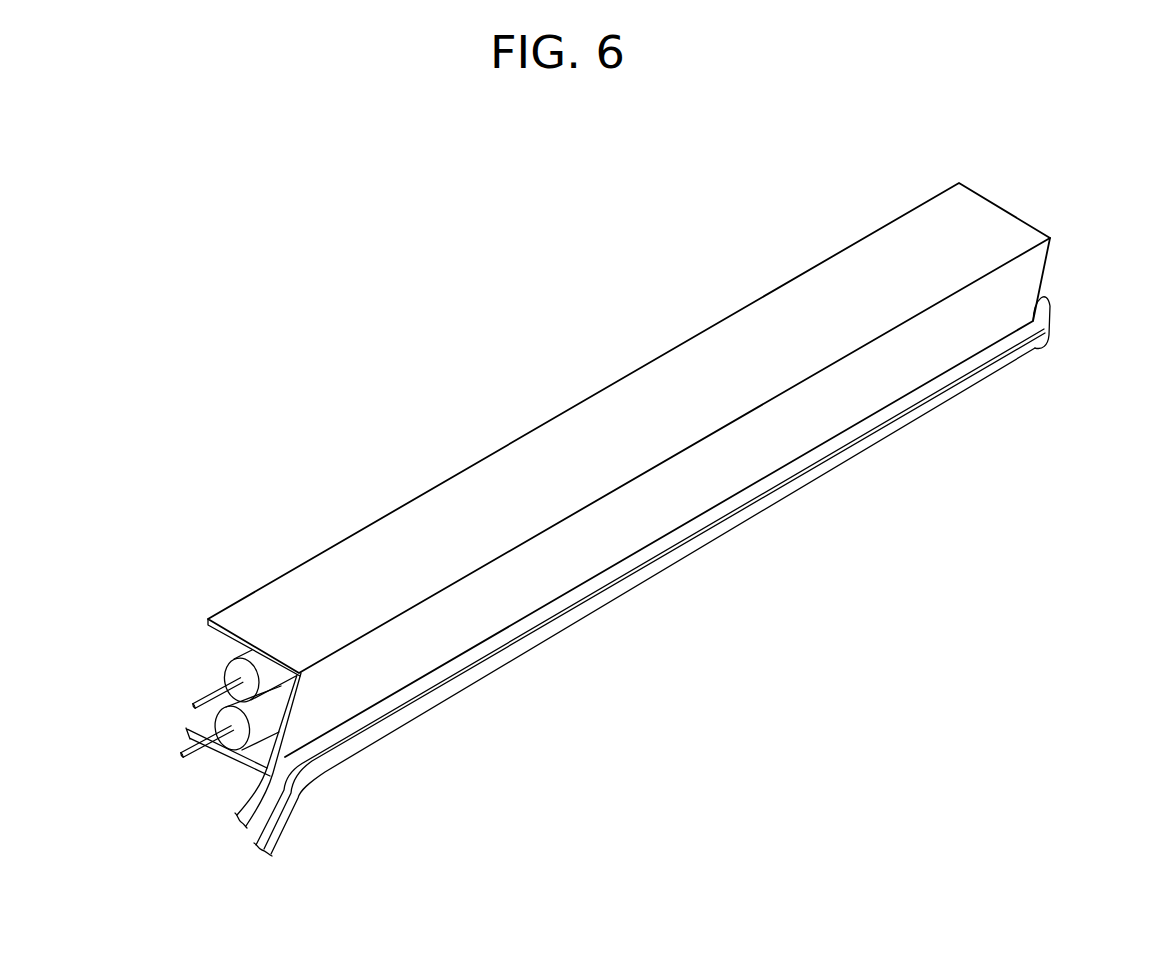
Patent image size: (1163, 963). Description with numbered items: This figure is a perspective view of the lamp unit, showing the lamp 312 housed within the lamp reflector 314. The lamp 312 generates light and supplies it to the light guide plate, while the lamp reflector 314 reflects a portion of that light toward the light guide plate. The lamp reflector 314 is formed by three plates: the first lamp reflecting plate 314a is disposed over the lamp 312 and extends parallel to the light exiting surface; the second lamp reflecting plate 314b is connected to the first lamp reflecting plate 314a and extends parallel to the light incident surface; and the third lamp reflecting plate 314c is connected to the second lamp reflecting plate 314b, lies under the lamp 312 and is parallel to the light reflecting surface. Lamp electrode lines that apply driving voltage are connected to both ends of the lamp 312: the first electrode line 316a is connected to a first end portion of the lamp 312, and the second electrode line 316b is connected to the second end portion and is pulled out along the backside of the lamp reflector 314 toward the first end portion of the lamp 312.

The lamp 312 is at (226, 669).
The lamp reflector 314 is at (616, 492).
The first lamp reflecting plate 314a is at (629, 429).
The second lamp reflecting plate 314b is at (1023, 285).
The third lamp reflecting plate 314c is at (187, 729).
The first electrode line 316a is at (181, 756).
The second electrode line 316b is at (277, 838).